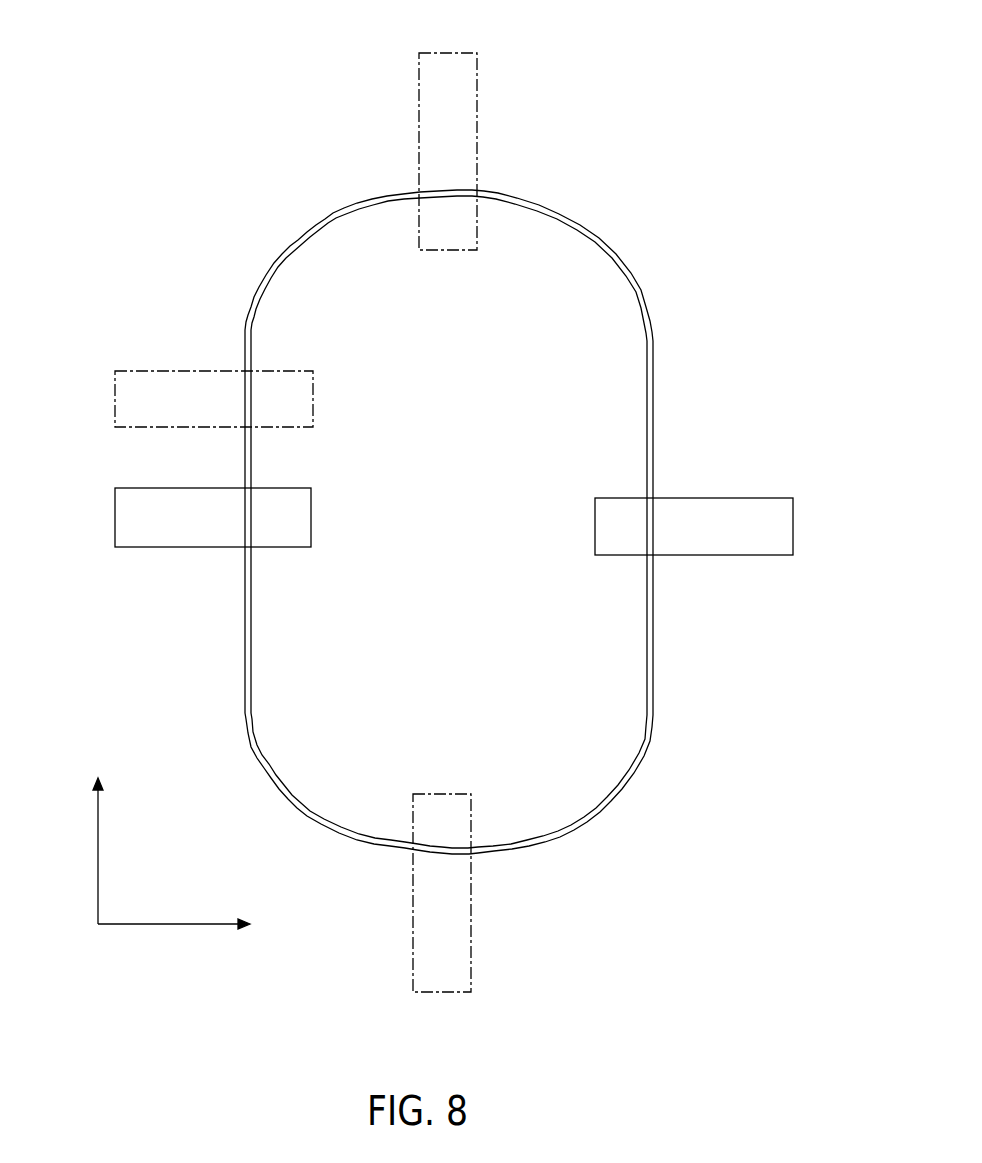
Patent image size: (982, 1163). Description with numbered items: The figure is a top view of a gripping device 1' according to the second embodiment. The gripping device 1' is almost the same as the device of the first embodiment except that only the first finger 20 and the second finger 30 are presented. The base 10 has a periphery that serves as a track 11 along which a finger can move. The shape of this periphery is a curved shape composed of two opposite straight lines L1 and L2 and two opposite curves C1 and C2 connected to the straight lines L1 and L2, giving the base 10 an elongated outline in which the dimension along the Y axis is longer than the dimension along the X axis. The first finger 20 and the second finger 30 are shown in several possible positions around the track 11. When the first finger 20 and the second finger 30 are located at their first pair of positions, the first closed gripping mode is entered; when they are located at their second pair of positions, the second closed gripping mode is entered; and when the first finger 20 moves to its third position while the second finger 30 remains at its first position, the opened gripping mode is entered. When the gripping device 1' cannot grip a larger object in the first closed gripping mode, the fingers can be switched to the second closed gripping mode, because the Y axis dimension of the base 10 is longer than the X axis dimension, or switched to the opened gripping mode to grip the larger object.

The gripping device 1' is at (452, 498).
The base 10 is at (283, 298).
The track 11 is at (285, 247).
The first finger 20 is at (419, 56).
The second finger 30 is at (115, 513).
The straight line L1 is at (652, 470).
The straight line L2 is at (245, 465).
The curve C1 is at (378, 196).
The curve C2 is at (525, 846).
The X-axis X is at (188, 925).
The Y-axis Y is at (101, 837).